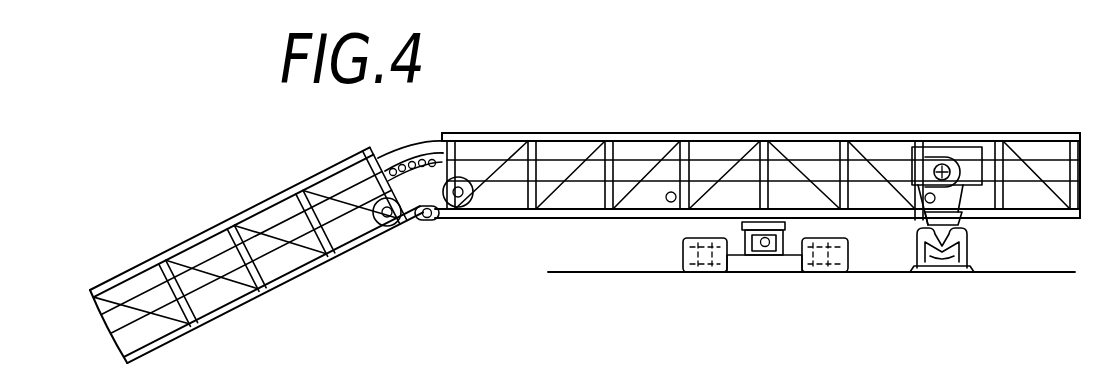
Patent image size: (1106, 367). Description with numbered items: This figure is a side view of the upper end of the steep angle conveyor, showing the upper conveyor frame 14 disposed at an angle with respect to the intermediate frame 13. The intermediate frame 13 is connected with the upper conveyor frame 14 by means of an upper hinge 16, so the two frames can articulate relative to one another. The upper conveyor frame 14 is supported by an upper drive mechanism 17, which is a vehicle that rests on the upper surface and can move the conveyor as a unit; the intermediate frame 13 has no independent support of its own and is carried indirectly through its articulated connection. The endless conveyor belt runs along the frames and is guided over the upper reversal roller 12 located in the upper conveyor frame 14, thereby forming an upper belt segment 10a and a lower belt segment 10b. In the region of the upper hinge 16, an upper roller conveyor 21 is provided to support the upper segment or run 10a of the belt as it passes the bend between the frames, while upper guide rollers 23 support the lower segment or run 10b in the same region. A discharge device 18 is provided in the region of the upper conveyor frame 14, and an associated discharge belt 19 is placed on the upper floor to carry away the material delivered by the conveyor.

The upper belt segment 10a is at (478, 155).
The lower belt segment 10b is at (342, 240).
The upper reversal roller 12 is at (910, 162).
The intermediate frame 13 is at (252, 207).
The upper conveyor frame 14 is at (697, 135).
The upper hinge 16 is at (428, 222).
The upper drive mechanism 17 is at (838, 258).
The discharge device 18 is at (958, 173).
The discharge belt 19 is at (966, 248).
The upper roller conveyor 21 is at (412, 155).
The upper guide rollers 23 is at (470, 203).